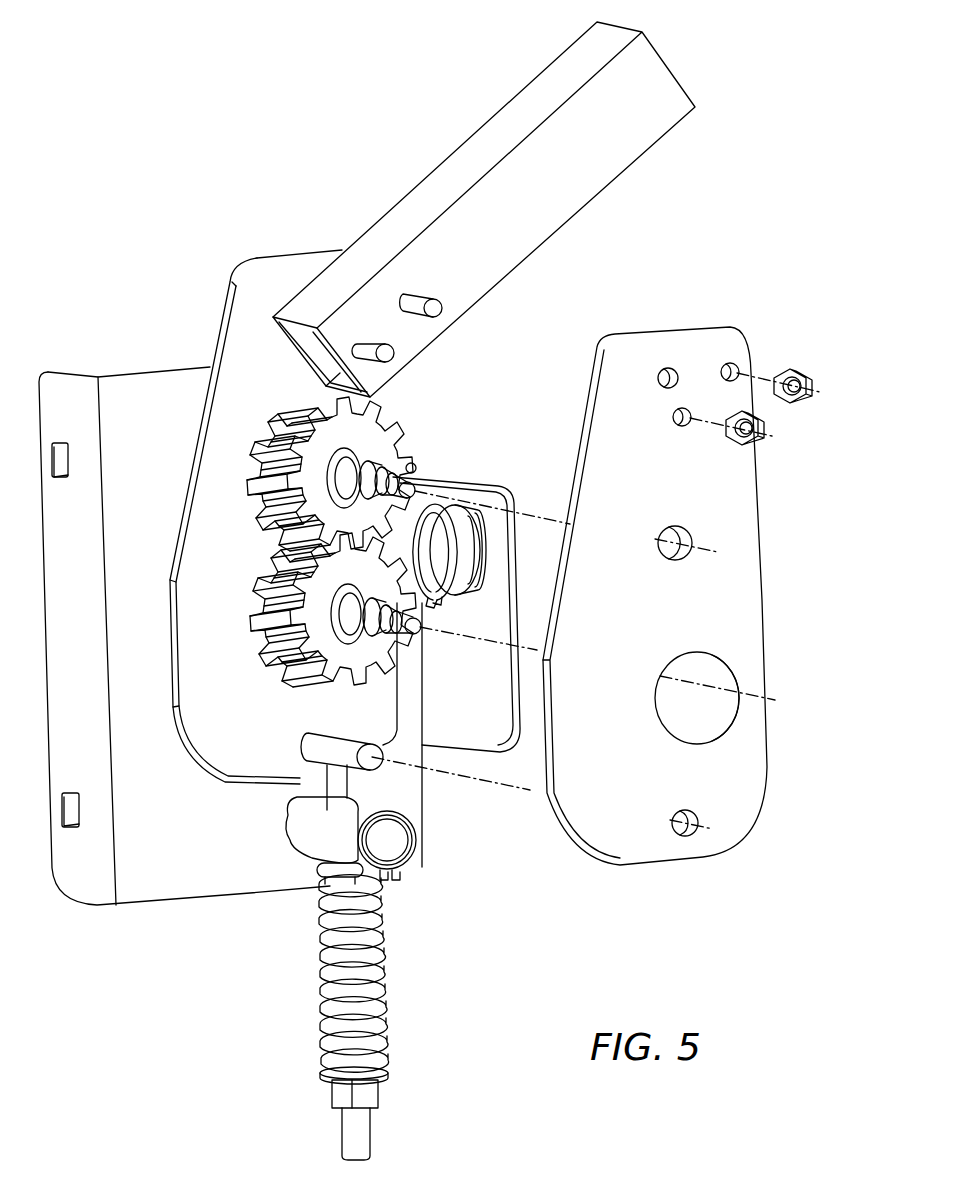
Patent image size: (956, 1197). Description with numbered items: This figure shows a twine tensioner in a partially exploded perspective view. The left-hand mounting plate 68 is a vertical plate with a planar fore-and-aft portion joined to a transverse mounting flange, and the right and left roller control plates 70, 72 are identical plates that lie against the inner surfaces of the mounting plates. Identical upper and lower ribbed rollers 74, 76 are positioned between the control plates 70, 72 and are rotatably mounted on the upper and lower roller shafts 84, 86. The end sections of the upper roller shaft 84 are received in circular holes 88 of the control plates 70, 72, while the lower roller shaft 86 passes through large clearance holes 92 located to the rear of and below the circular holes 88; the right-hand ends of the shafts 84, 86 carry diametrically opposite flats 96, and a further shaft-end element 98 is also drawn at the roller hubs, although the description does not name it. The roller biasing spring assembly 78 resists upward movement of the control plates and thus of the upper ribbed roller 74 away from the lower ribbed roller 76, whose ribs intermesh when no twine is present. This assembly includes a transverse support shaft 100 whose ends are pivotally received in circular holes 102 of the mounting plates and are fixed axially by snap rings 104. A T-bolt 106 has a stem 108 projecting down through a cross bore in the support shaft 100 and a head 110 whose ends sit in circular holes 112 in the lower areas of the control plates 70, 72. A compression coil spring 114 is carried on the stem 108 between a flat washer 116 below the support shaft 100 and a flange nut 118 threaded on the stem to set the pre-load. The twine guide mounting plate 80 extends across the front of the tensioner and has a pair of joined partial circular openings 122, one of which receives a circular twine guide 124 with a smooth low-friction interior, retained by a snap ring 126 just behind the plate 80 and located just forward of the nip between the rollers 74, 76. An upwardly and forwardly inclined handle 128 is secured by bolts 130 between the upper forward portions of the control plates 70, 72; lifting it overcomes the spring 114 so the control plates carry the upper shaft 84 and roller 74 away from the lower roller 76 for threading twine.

The left-hand mounting plate 68 is at (230, 898).
The right roller control plate 70 is at (703, 342).
The left roller control plate 72 is at (281, 272).
The upper ribbed roller 74 is at (266, 500).
The lower ribbed roller 76 is at (267, 648).
The roller biasing spring assembly 78 is at (398, 1017).
The twine guide mounting plate 80 is at (476, 744).
The upper roller shaft 84 is at (412, 464).
The lower roller shaft 86 is at (413, 634).
The circular holes 88 is at (690, 540).
The large holes 92 is at (723, 723).
The flats 96 is at (386, 460).
The bushing 98 is at (393, 500).
The transverse support shaft 100 is at (414, 841).
The circular holes 102 is at (297, 815).
The snap rings 104 is at (402, 878).
The T-bolt 106 is at (354, 787).
The stem 108 is at (370, 1138).
The head 110 is at (380, 752).
The circular holes 112 is at (690, 810).
The compression coil spring 114 is at (384, 982).
The flat washer 116 is at (316, 869).
The flange nut 118 is at (379, 1093).
The partial circular openings 122 is at (479, 562).
The circular twine guide 124 is at (464, 538).
The snap ring 126 is at (438, 606).
The handle 128 is at (526, 220).
The bolts 130 is at (394, 354).